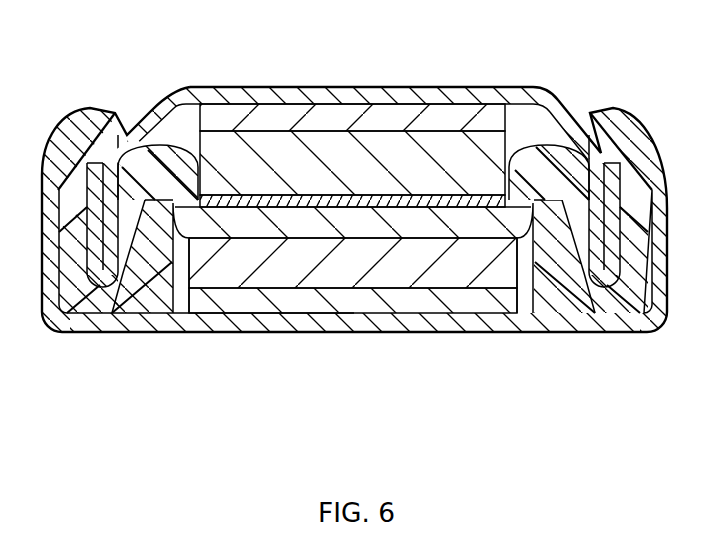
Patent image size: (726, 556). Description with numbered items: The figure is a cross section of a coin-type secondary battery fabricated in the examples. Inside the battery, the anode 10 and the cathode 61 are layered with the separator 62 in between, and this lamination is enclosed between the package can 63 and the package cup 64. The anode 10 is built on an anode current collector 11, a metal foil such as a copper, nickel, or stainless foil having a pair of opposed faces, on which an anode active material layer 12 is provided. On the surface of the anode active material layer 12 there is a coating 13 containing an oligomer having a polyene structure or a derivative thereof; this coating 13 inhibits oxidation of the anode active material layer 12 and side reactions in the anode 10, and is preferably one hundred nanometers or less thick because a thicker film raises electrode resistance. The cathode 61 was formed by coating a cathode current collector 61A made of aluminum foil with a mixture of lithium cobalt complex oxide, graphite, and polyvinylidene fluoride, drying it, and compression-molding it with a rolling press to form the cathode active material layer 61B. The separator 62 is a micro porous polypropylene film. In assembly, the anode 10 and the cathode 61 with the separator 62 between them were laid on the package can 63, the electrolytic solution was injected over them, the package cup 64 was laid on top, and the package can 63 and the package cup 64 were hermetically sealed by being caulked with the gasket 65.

The anode 10 is at (352, 103).
The anode current collector 11 is at (292, 125).
The anode active material layer 12 is at (350, 150).
The coating 13 is at (411, 197).
The cathode 61 is at (353, 341).
The cathode current collector 61A is at (477, 393).
The cathode active material layer 61B is at (455, 272).
The separator 62 is at (548, 157).
The package can 63 is at (246, 322).
The package cup 64 is at (198, 95).
The gasket 65 is at (135, 307).